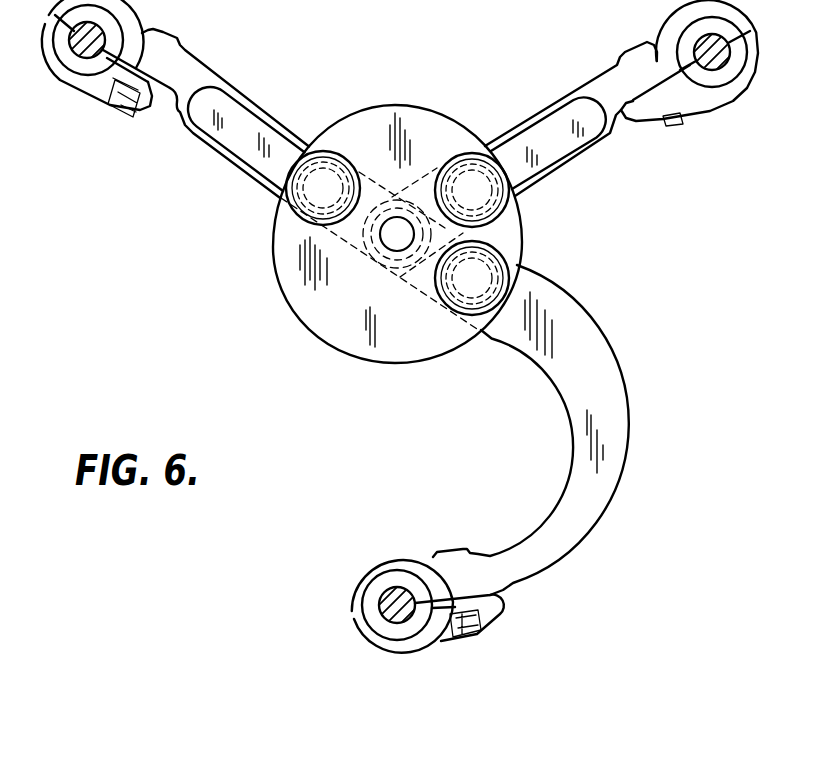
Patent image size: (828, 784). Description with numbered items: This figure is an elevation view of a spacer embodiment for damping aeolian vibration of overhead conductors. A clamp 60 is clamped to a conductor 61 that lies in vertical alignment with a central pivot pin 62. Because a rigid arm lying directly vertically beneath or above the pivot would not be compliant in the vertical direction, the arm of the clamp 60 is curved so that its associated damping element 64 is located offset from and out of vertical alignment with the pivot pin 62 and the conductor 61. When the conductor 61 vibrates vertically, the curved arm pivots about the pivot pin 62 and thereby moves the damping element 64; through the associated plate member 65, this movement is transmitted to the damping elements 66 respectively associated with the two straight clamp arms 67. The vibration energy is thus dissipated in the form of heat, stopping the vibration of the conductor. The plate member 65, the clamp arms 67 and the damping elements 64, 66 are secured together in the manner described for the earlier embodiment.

The clamp 60 is at (397, 552).
The conductor 61 is at (383, 591).
The pivot pin 62 is at (388, 247).
The damping element 64 is at (457, 307).
The plate member 65 is at (422, 118).
The damping elements 66 is at (337, 152).
The straight clamp arms 67 is at (242, 95).